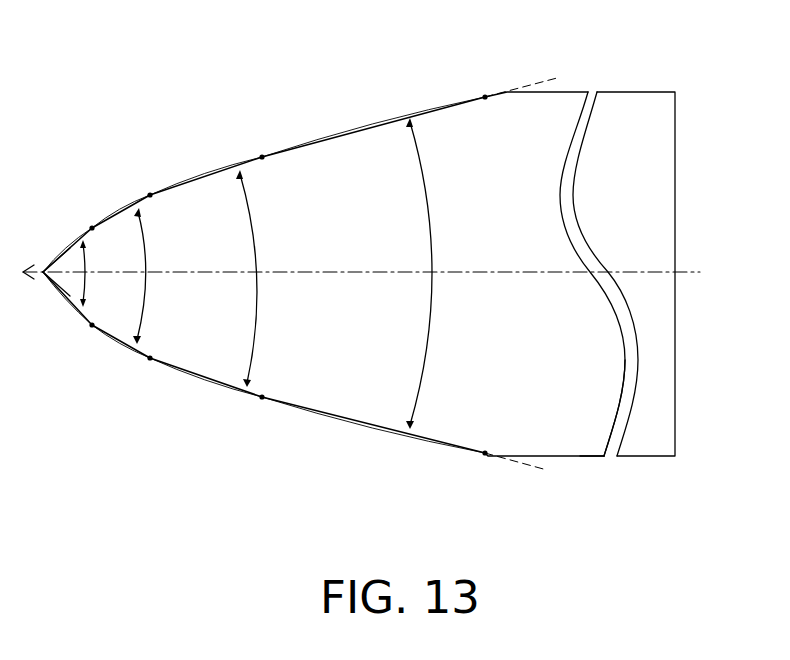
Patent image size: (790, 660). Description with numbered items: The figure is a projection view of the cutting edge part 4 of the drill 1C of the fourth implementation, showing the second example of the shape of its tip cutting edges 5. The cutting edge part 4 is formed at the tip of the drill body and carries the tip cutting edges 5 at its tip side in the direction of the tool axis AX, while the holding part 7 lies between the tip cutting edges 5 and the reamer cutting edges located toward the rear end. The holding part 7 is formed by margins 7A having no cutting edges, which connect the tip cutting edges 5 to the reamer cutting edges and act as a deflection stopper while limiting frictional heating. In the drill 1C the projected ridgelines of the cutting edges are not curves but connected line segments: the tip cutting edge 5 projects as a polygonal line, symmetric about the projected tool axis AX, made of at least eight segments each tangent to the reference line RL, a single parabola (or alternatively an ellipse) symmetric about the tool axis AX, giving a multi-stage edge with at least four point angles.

The drill 1C is at (170, 114).
The tip cutting edge 5 is at (61, 254).
The holding part 7 is at (563, 91).
The margin 7A is at (588, 462).
The cutting edge part 4 is at (622, 84).
The tool axis AX is at (685, 270).
The reference line RL is at (533, 468).